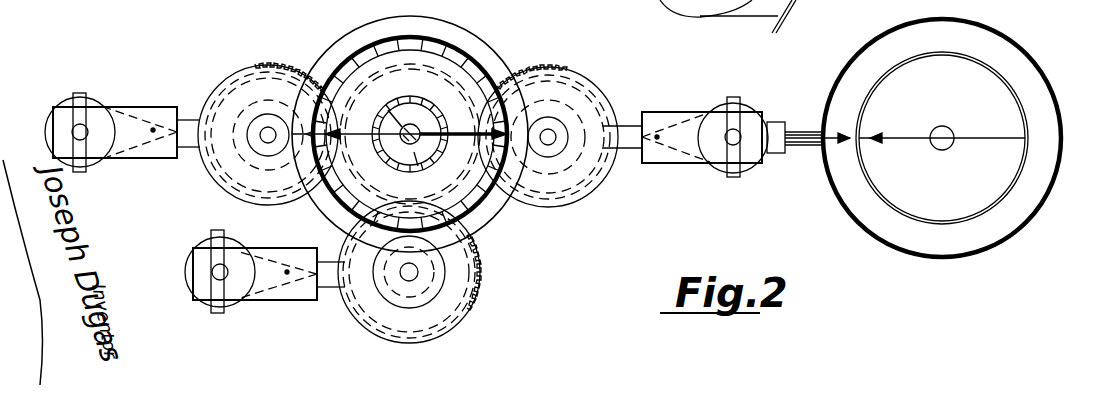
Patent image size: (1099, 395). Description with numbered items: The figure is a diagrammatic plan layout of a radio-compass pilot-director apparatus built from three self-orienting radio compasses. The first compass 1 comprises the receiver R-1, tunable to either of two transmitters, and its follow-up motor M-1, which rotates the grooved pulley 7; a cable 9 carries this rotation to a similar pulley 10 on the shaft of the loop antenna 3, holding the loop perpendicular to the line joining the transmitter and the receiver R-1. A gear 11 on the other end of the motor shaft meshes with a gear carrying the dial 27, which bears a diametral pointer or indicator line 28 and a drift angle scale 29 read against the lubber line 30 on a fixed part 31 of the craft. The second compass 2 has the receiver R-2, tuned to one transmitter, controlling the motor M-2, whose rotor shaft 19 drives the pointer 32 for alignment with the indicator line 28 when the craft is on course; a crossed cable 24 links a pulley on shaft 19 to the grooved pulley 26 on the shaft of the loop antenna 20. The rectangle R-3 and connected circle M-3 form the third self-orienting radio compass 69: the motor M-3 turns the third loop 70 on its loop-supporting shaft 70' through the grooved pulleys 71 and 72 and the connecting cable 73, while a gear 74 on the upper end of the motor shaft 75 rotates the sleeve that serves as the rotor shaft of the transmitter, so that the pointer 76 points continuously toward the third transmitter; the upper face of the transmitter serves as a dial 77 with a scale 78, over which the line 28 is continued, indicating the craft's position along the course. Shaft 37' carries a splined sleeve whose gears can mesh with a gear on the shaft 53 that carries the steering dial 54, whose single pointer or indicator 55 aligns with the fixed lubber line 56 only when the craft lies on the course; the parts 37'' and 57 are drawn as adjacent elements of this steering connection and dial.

The compass 1 is at (156, 183).
The automatic radio compass 2 is at (645, 197).
The loop antenna 3 is at (88, 96).
The grooved pulley 7 is at (204, 176).
The cable 9 is at (140, 117).
The pulley 10 is at (45, 132).
The gear 11 is at (212, 88).
The rotor shaft 19 is at (554, 132).
The loop antenna 20 is at (728, 104).
The crossed cable 24 is at (648, 112).
The grooved pulley 26 is at (715, 165).
The dial 27 is at (460, 60).
The diametral pointer or indicator line 28 is at (350, 150).
The drift angle scale 29 is at (432, 40).
The lubber line 30 is at (278, 126).
The fixed part 31 is at (330, 48).
The pointer 32 is at (478, 134).
The shaft 37' is at (800, 118).
The coupling 37'' is at (790, 158).
The shaft 53 is at (944, 132).
The steering dial 54 is at (992, 90).
The pointer or indicator 55 is at (962, 142).
The lubber line 56 is at (840, 132).
The dial rim 57 is at (852, 66).
The self-orienting radio compass 69 is at (316, 323).
The third loop 70 is at (198, 268).
The loop-supporting shaft 70' is at (204, 272).
The grooved pulley 71 is at (230, 250).
The grooved pulley 72 is at (470, 290).
The connecting cable 73 is at (280, 252).
The gear 74 is at (484, 262).
The shaft 75 is at (414, 270).
The pointer 76 is at (392, 118).
The dial 77 is at (420, 166).
The scale 78 is at (420, 108).
The receiver R-1 is at (135, 163).
The receiver R-2 is at (678, 165).
The receiver R-3 is at (248, 300).
The follow-up motor M-1 is at (262, 92).
The motor M-2 is at (553, 70).
The motor M-3 is at (450, 330).